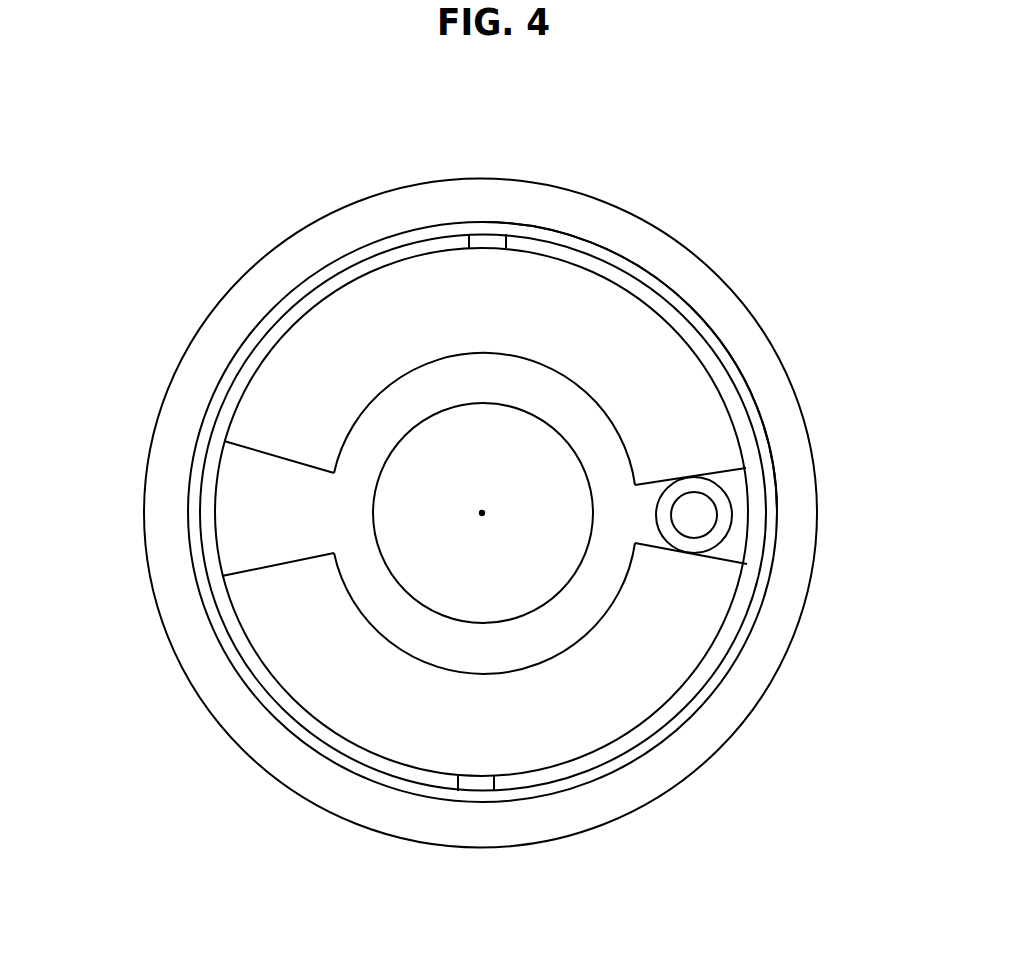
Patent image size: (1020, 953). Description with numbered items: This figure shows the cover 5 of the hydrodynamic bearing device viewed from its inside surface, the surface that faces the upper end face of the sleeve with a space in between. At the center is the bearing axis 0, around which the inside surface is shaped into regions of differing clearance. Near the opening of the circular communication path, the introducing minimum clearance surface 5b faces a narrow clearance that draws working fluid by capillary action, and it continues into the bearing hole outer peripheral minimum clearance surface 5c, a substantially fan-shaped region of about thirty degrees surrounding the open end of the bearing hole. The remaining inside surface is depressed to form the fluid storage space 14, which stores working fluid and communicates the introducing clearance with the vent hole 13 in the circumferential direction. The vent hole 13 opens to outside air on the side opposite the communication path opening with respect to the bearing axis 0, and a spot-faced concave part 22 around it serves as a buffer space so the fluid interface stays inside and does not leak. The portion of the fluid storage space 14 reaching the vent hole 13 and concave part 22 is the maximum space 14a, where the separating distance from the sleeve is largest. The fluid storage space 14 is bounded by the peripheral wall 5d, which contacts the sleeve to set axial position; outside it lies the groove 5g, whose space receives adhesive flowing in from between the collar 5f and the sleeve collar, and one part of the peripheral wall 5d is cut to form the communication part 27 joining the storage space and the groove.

The cover 5 is at (290, 220).
The introducing minimum clearance surface 5b is at (278, 470).
The bearing hole outer peripheral minimum clearance surface 5c is at (363, 582).
The peripheral wall 5d is at (643, 730).
The collar 5f is at (295, 770).
The groove 5g is at (707, 690).
The bearing axis 0 is at (482, 516).
The vent hole 13 is at (700, 512).
The fluid storage space 14 is at (613, 300).
The maximum space 14a is at (735, 540).
The concave part 22 is at (712, 543).
The communication part 27 is at (490, 237).